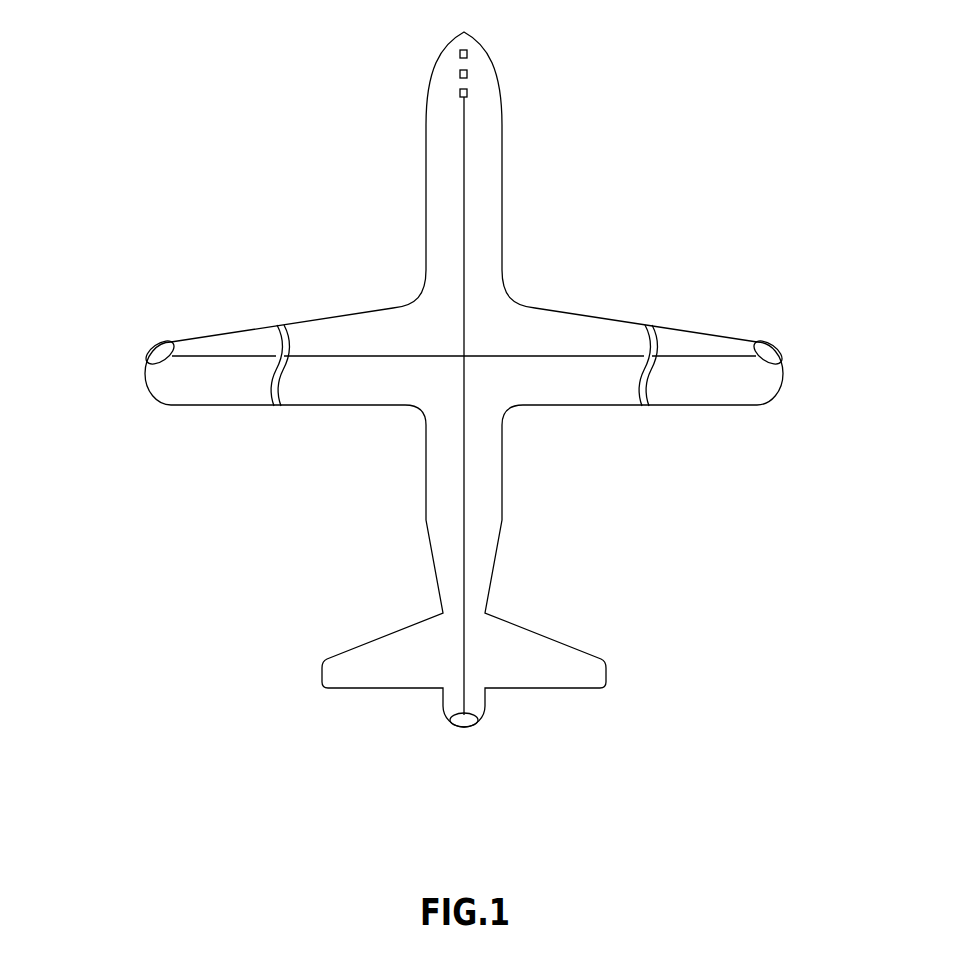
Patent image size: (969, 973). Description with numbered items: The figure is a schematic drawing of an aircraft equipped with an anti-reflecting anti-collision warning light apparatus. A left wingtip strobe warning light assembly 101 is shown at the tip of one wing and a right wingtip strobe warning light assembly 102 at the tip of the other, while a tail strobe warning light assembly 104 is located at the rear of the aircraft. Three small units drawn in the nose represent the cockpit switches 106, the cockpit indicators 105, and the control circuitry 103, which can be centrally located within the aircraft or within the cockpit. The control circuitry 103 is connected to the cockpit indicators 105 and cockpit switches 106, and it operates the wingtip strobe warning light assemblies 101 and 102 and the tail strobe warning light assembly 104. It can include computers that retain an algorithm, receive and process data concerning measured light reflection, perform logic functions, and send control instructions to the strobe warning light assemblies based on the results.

The left wingtip strobe warning light assembly 101 is at (152, 352).
The right wingtip strobe warning light assembly 102 is at (777, 350).
The control circuitry 103 is at (467, 93).
The tail strobe warning light assembly 104 is at (467, 726).
The cockpit indicators 105 is at (467, 74).
The cockpit switches 106 is at (467, 53).